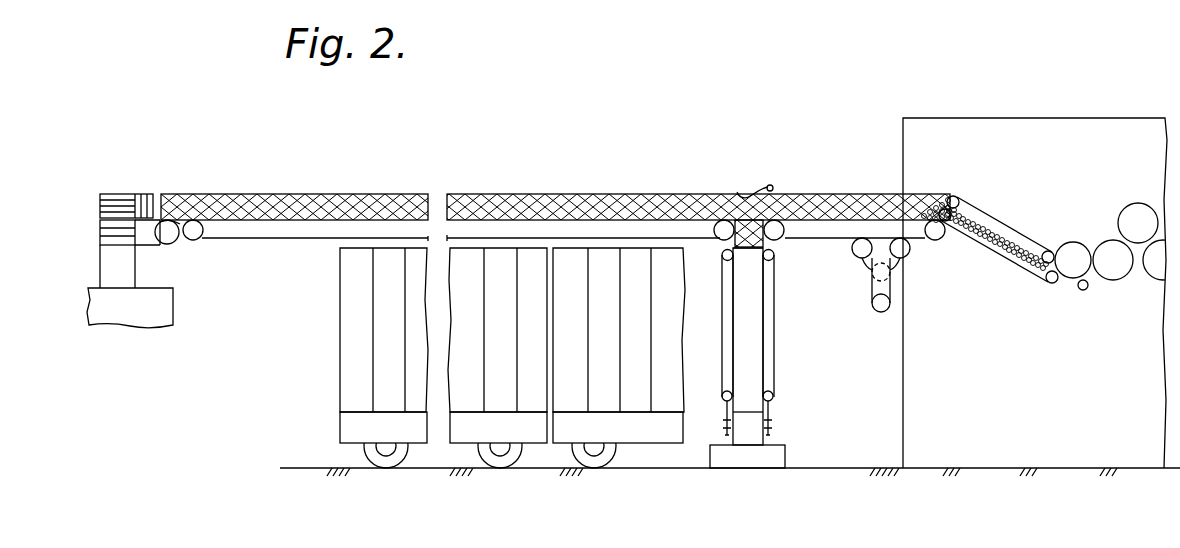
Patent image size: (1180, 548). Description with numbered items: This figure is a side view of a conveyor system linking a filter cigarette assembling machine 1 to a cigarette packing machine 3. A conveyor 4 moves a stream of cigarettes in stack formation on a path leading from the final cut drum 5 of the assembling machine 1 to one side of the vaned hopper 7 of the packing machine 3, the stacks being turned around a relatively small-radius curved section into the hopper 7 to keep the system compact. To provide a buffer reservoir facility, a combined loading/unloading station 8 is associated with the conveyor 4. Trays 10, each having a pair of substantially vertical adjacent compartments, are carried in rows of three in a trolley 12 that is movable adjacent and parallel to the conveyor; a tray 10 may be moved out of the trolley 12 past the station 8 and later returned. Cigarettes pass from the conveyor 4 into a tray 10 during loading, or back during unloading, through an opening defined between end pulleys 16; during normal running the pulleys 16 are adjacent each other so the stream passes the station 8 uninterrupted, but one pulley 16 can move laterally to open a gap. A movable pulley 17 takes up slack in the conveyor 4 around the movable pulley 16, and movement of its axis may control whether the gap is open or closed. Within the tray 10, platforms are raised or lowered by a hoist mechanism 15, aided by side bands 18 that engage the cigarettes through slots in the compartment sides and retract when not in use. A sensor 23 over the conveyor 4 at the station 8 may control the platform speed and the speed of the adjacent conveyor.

The filter cigarette assembling machine 1 is at (1061, 181).
The cigarette packing machine 3 is at (153, 315).
The conveyor 4 is at (808, 212).
The final cut drum 5 is at (1079, 240).
The vaned hopper 7 is at (138, 264).
The combined loading/unloading station 8 is at (785, 251).
The tray 10 is at (383, 323).
The trolley 12 is at (352, 432).
The hoist mechanism 15 is at (773, 424).
The end pulley 16 is at (722, 224).
The movable pulley 17 is at (885, 312).
The side band 18 is at (776, 330).
The sensor 23 is at (742, 196).